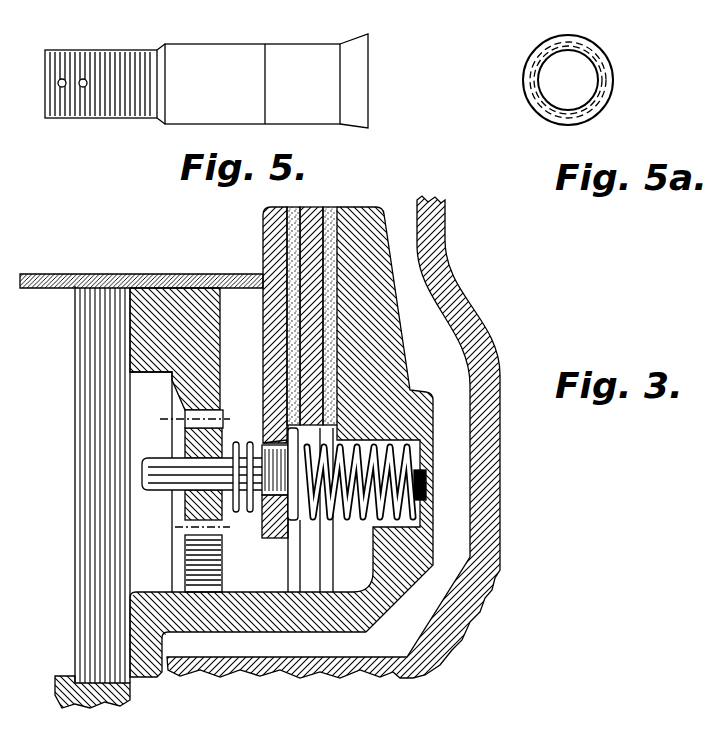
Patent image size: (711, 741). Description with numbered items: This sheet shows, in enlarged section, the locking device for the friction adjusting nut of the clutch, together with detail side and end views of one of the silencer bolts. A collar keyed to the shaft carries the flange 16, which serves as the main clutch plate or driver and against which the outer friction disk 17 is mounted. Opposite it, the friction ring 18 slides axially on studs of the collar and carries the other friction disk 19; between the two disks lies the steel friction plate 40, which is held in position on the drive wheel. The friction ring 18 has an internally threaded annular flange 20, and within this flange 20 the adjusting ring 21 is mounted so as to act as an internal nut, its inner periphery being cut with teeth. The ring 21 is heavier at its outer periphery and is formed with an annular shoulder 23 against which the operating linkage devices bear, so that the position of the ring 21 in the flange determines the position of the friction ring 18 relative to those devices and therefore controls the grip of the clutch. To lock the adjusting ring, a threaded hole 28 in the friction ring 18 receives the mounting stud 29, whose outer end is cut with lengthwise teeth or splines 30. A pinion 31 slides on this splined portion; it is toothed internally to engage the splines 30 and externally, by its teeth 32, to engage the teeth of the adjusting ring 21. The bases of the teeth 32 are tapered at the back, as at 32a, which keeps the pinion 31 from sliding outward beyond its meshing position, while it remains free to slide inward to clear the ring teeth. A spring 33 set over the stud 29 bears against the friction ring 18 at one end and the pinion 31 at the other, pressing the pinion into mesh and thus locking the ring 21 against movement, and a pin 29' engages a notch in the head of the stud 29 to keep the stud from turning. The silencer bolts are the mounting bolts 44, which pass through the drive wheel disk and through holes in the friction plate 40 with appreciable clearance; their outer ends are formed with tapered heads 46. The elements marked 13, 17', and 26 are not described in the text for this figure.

In FIG. 3, the bracket 13 is at (291, 634).
In FIG. 3, the flange 16 is at (380, 355).
In FIG. 3, the outer friction disk 17 is at (333, 437).
In FIG. 3, the spring 17' is at (389, 481).
In FIG. 3, the friction ring 18 is at (275, 243).
In FIG. 3, the friction disk 19 is at (300, 216).
In FIG. 3, the internally threaded annular flange 20 is at (100, 276).
In FIG. 3, the adjusting ring 21 is at (202, 296).
In FIG. 3, the annular shoulder 23 is at (130, 362).
In FIG. 3, the lower end of block 26 is at (263, 430).
In FIG. 3, the threaded hole 28 is at (262, 497).
In FIG. 3, the mounting stud 29 is at (262, 545).
In FIG. 3, the pin 29' is at (298, 510).
In FIG. 3, the lengthwise teeth or splines 30 is at (160, 484).
In FIG. 3, the pinion 31 is at (188, 520).
In FIG. 3, the teeth of the pinion 32 is at (190, 410).
In FIG. 3, the tapered bases of the teeth 32a is at (188, 540).
In FIG. 3, the spring 33 is at (235, 442).
In FIG. 3, the friction plate 40 is at (305, 217).
In FIG. 5, the mounting bolts 44 is at (215, 58).
In FIG. 5A, the mounting bolts 44 is at (568, 80).
In FIG. 5, the tapered heads 46 is at (350, 84).
In FIG. 5A, the tapered heads 46 is at (613, 88).